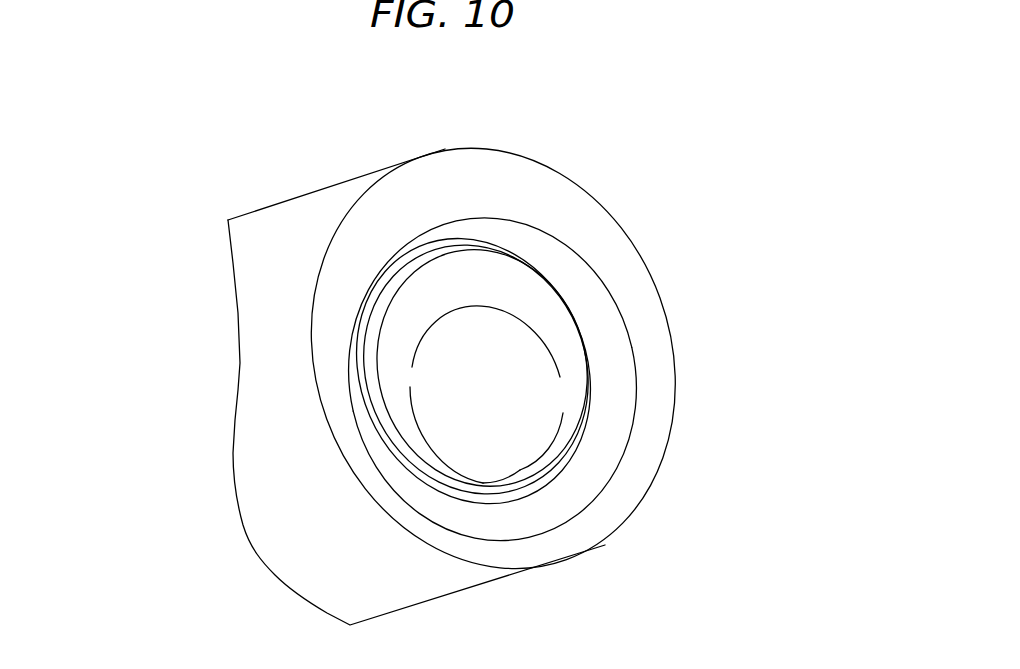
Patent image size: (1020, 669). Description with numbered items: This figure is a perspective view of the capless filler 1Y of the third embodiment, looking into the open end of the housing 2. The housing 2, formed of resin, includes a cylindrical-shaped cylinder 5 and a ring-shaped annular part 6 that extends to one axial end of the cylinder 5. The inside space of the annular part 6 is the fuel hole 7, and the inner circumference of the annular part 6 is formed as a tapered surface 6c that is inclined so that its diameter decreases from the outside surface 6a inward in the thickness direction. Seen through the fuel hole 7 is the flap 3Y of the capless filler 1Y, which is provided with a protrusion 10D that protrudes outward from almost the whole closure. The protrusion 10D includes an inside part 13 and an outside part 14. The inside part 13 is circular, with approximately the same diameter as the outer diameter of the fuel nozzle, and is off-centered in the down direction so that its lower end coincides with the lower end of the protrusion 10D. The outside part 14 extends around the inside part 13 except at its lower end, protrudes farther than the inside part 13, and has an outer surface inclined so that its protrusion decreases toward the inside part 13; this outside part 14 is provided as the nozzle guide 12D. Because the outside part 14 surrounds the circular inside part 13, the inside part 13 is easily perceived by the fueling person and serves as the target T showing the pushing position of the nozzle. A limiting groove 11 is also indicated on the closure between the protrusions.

The capless filler 1Y is at (669, 121).
The housing 2 is at (272, 220).
The cylinder 5 is at (245, 227).
The annular part 6 is at (630, 273).
The outside surface 6a is at (603, 232).
The tapered surface 6c is at (580, 493).
The fuel hole 7 is at (587, 467).
The flap 3Y is at (455, 267).
The outside part 14 is at (400, 333).
The nozzle guide 12D is at (482, 368).
The protrusion 10D is at (565, 348).
The inside part 13 is at (520, 397).
The target T is at (523, 418).
The limiting groove 11 is at (483, 455).